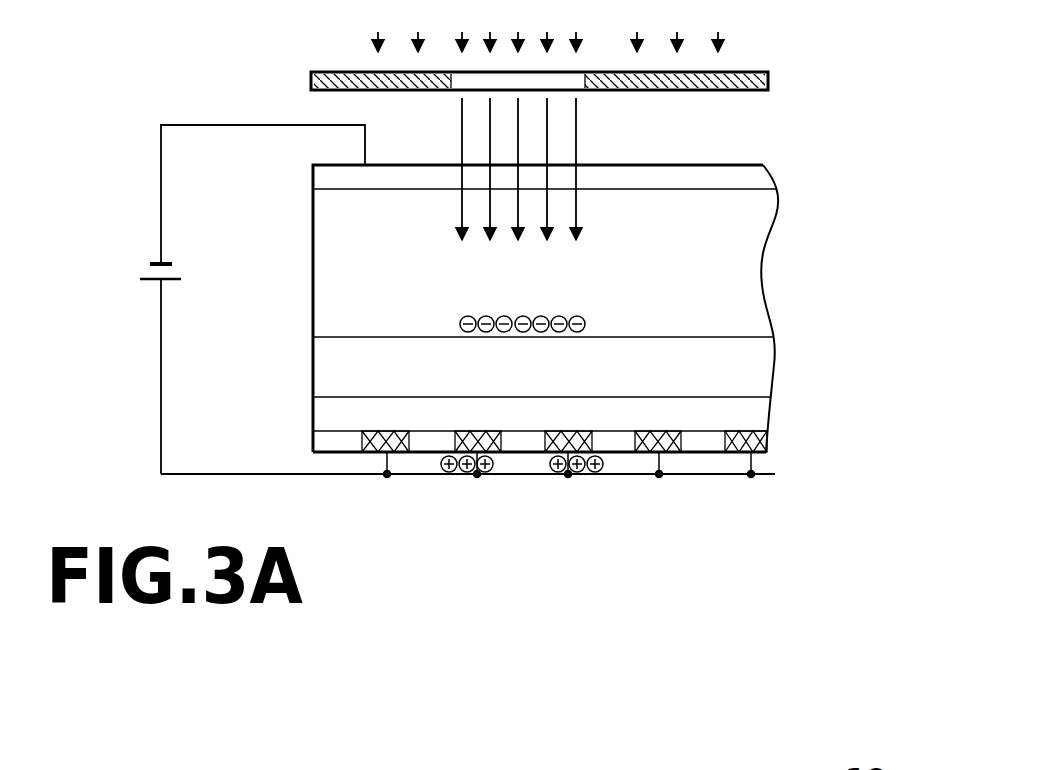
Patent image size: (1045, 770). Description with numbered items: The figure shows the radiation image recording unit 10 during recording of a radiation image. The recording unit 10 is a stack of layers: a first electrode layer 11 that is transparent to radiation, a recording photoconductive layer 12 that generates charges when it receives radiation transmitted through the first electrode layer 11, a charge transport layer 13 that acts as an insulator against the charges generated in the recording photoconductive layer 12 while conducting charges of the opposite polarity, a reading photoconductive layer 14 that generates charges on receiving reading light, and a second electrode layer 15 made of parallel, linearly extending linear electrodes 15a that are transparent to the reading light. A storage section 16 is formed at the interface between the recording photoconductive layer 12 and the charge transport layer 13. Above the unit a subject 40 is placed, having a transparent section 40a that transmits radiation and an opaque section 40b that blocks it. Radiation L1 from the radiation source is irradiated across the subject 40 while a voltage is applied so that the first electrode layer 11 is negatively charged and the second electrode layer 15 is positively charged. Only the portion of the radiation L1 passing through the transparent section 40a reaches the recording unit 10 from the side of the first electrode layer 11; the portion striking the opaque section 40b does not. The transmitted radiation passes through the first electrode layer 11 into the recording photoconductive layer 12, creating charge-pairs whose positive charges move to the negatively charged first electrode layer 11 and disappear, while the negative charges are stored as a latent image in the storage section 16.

The radiation image recording unit 10 is at (787, 162).
The first electrode layer 11 is at (325, 177).
The recording photoconductive layer 12 is at (327, 263).
The charge transport layer 13 is at (327, 382).
The reading photoconductive layer 14 is at (328, 417).
The second electrode layer 15 is at (327, 447).
The linear electrode 15a is at (508, 448).
The storage section 16 is at (338, 336).
The subject 40 is at (757, 78).
The transparent section 40a is at (458, 84).
The opaque section 40b is at (318, 78).
The radiation L1 is at (725, 35).